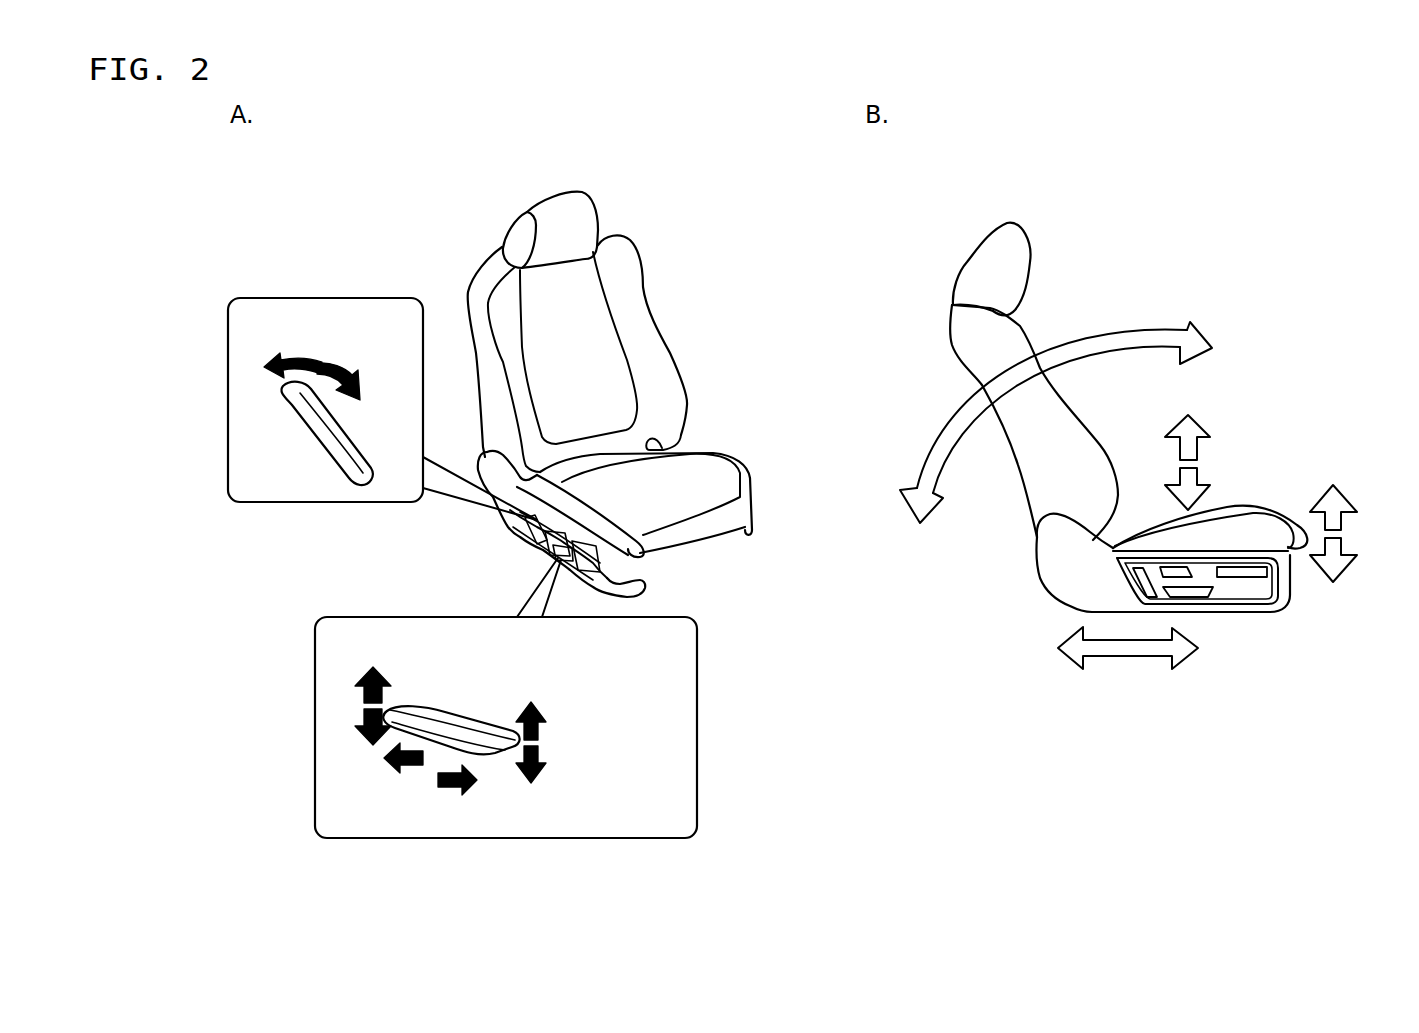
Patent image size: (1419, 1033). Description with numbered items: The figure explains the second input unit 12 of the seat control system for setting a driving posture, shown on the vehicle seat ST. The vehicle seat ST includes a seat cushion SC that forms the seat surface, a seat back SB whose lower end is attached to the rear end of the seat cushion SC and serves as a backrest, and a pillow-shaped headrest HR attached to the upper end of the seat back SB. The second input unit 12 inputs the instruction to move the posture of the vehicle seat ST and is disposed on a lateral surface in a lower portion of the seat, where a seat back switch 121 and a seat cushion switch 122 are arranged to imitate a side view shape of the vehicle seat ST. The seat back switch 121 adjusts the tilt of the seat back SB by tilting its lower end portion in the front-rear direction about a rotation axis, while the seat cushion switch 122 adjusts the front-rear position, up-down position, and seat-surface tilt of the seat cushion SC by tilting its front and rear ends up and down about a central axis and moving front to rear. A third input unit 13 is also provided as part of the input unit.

The vehicle seat ST is at (623, 168).
The headrest HR is at (562, 205).
The seat back SB is at (612, 233).
The seat cushion SC is at (680, 486).
The second input unit 12 is at (214, 567).
The seat back switch 121 is at (1157, 598).
The seat cushion switch 122 is at (1212, 590).
The third input unit 13 is at (1250, 574).